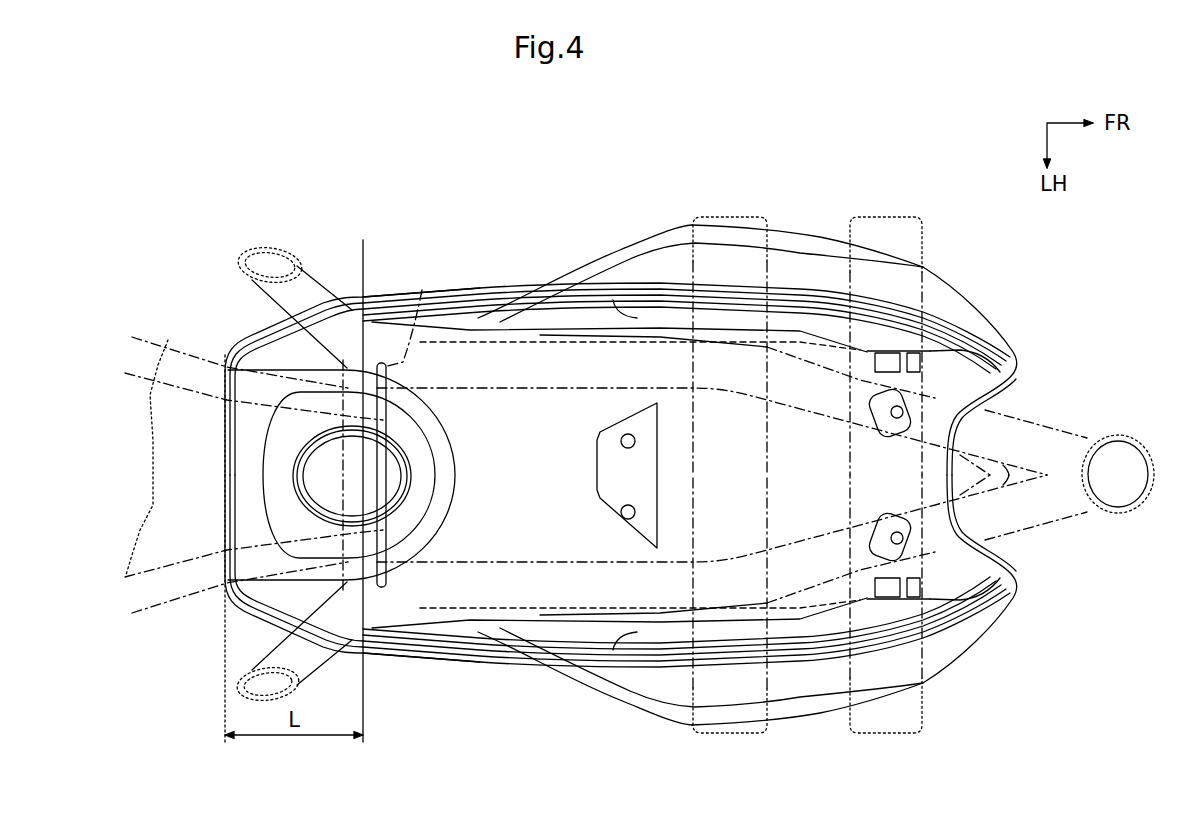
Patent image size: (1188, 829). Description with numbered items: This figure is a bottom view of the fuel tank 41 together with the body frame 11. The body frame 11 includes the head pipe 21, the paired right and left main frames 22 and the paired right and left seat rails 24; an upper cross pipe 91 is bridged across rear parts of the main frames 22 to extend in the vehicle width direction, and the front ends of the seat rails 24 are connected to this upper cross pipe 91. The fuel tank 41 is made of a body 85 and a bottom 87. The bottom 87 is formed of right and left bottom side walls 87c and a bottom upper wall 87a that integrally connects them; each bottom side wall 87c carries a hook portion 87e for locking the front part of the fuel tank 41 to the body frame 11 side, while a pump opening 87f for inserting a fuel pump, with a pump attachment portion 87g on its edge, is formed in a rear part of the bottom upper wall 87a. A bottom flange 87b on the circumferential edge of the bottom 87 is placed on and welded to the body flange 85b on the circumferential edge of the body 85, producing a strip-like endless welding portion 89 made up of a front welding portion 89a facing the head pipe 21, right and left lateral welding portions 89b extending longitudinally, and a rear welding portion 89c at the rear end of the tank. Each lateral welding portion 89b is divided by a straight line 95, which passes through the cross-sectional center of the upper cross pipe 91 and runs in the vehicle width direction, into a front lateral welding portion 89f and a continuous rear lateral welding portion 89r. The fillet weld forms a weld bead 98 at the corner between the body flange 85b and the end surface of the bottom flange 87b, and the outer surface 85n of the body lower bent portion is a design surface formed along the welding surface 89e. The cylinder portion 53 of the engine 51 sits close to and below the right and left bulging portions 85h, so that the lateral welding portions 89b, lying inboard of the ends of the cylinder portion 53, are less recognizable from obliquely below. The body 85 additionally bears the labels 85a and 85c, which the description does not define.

The body frame 11 is at (1067, 420).
The head pipe 21 is at (1120, 517).
The main frames 22 is at (1010, 407).
The seat rails 24 is at (188, 353).
The fuel tank 41 is at (990, 307).
The engine 51 is at (933, 709).
The cylinder portion 53 is at (870, 737).
The body 85 is at (967, 653).
The side wall of rear fender 85a is at (477, 297).
The body flange 85b is at (823, 293).
The rear mounting tab 85c is at (880, 240).
The bulging portions 85h is at (745, 240).
The outer surface of body lower bent portion 85n is at (568, 277).
The bottom 87 is at (557, 353).
The bottom upper wall 87a is at (543, 540).
The bottom flange 87b is at (787, 297).
The bottom side walls 87c is at (613, 300).
The hook portion 87e is at (913, 362).
The pump opening 87f is at (402, 487).
The pump attachment portion 87g is at (315, 545).
The welding portion 89 is at (663, 278).
The front welding portion 89a is at (1000, 530).
The lateral welding portions 89b is at (717, 280).
The rear welding portion 89c is at (140, 423).
The welding surface 89e is at (975, 355).
The front lateral welding portion 89f is at (887, 362).
The rear lateral welding portion 89r is at (258, 327).
The upper cross pipe 91 is at (422, 290).
The straight line 95 is at (357, 267).
The weld bead 98 is at (657, 655).